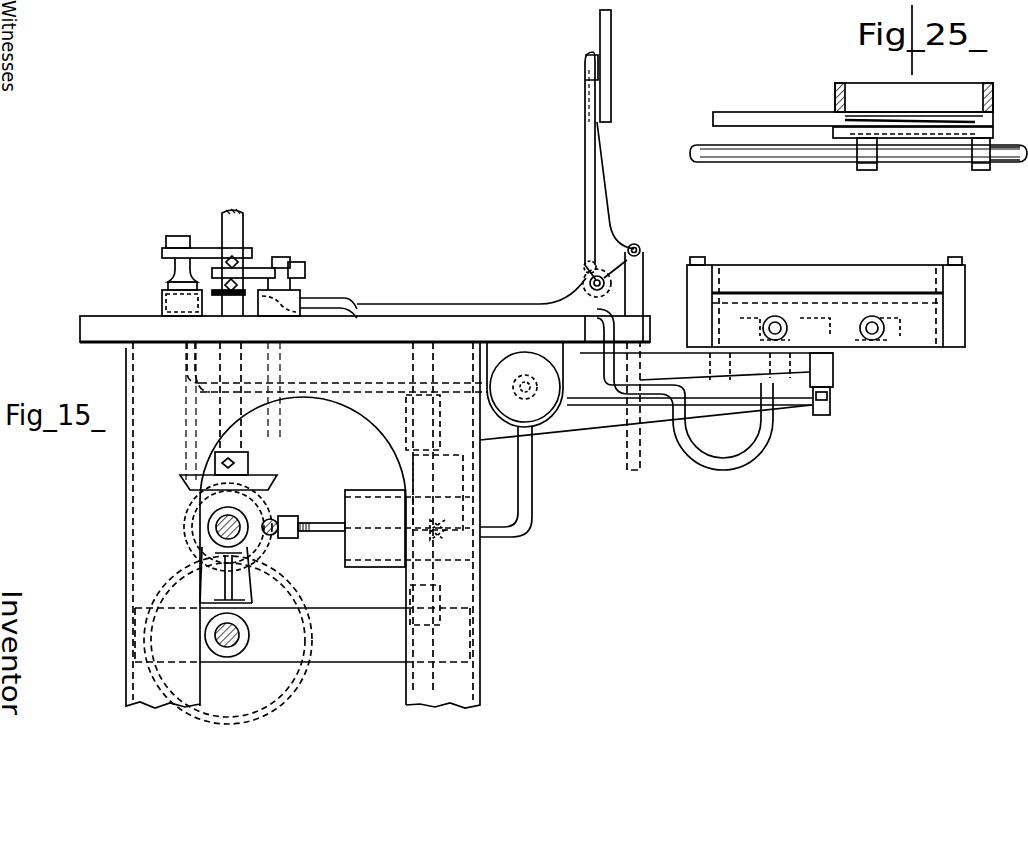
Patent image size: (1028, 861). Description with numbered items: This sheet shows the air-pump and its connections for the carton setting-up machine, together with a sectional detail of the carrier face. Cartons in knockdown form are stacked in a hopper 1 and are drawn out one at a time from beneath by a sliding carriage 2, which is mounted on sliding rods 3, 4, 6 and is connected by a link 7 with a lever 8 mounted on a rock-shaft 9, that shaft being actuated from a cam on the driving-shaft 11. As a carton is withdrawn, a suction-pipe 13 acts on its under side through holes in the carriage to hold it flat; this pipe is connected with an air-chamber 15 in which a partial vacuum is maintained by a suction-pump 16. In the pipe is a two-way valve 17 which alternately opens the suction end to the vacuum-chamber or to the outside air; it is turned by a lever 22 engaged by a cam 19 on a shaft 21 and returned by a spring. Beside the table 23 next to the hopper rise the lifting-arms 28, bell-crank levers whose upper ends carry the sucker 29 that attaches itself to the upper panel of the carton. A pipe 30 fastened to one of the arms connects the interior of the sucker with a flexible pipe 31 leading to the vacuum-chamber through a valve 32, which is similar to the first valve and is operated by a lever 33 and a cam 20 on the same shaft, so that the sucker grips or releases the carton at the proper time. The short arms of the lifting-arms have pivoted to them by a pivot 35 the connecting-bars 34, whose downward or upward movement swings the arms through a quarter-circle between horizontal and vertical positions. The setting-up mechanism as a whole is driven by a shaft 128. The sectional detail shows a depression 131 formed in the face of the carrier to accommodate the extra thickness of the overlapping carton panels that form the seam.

In FIG. 15, the hopper 1 is at (800, 275).
In FIG. 25, the hopper 1 is at (835, 88).
In FIG. 15, the sliding carriage 2 is at (827, 284).
In FIG. 25, the sliding carriage 2 is at (745, 115).
In FIG. 15, the sliding rod 3 is at (775, 318).
In FIG. 15, the sliding rod 4 is at (876, 340).
In FIG. 25, the sliding rod 4 is at (1010, 162).
In FIG. 25, the sliding rod 6 is at (775, 158).
In FIG. 15, the link 7 is at (835, 396).
In FIG. 15, the lever 8 is at (610, 422).
In FIG. 15, the rock-shaft 9 is at (426, 468).
In FIG. 15, the driving-shaft 11 is at (242, 640).
In FIG. 15, the suction-pipe 13 is at (758, 446).
In FIG. 15, the air-chamber 15 is at (545, 405).
In FIG. 15, the suction-pump 16 is at (370, 493).
In FIG. 15, the two-way valve 17 is at (162, 300).
In FIG. 15, the cam 19 is at (206, 250).
In FIG. 15, the cam 20 is at (262, 278).
In FIG. 15, the shaft 21 is at (236, 233).
In FIG. 15, the lever 22 is at (168, 240).
In FIG. 15, the table 23 is at (458, 330).
In FIG. 15, the lifting-arms 28 is at (602, 193).
In FIG. 15, the sucker 29 is at (610, 97).
In FIG. 15, the pipe 30 is at (590, 158).
In FIG. 15, the flexible pipe 31 is at (345, 302).
In FIG. 15, the valve 32 is at (290, 298).
In FIG. 15, the lever 33 is at (306, 262).
In FIG. 15, the connecting-bars 34 is at (640, 270).
In FIG. 15, the pivot 35 is at (638, 246).
In FIG. 15, the shaft 128 is at (240, 515).
In FIG. 25, the depression 131 is at (908, 122).